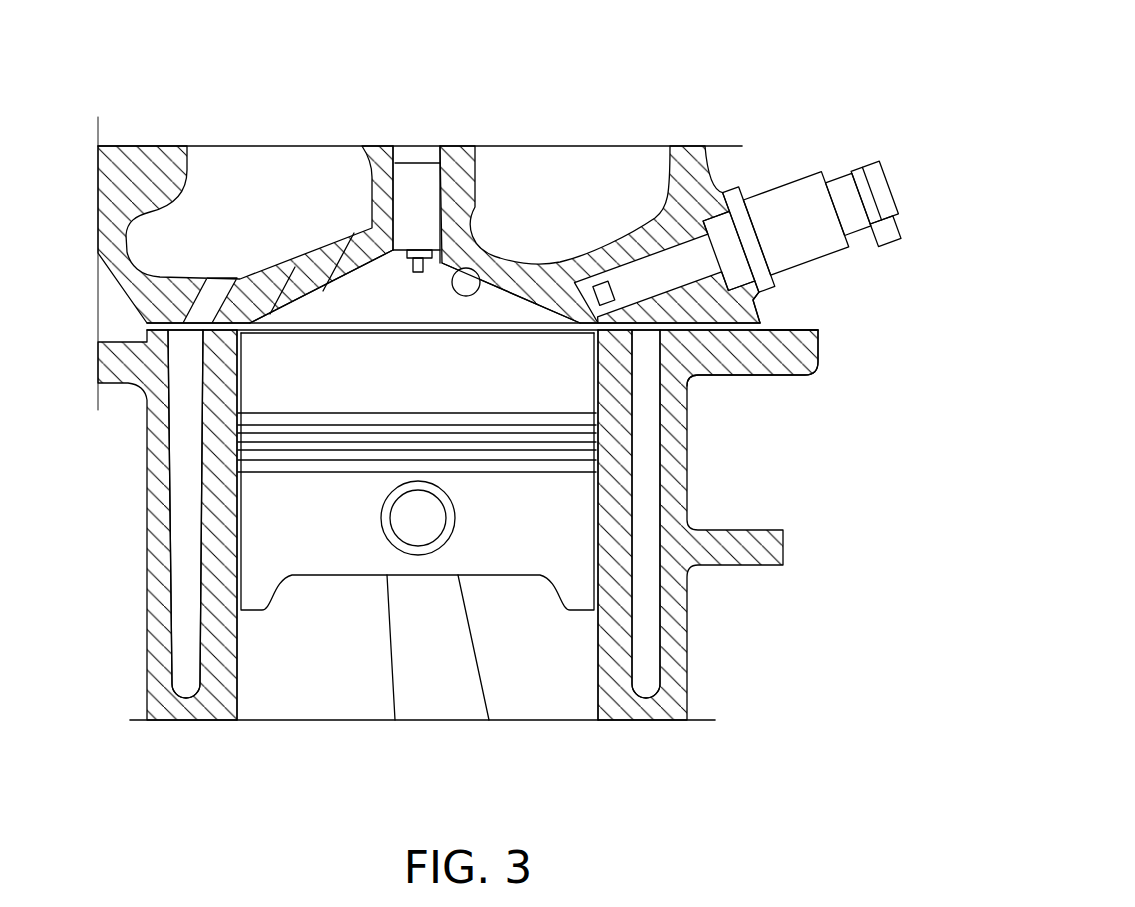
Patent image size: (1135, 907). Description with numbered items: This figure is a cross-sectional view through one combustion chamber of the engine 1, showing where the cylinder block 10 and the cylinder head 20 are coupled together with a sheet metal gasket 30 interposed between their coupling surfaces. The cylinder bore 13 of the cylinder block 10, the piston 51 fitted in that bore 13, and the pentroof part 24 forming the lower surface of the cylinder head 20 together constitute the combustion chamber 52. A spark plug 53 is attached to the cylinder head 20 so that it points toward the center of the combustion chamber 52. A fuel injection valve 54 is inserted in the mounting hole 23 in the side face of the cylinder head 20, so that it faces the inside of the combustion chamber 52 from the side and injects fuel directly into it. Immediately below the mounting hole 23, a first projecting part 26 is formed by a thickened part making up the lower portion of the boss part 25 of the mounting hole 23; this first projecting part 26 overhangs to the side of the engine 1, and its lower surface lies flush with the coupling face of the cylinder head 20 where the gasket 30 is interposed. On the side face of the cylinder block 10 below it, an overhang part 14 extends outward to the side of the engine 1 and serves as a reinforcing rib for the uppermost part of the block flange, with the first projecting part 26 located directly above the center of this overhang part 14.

The engine 1 is at (784, 88).
The cylinder block 10 is at (616, 730).
The cylinder bore 13 is at (597, 377).
The overhang part 14 is at (773, 360).
The cylinder head 20 is at (702, 141).
The mounting hole 23 is at (619, 238).
The pentroof part 24 is at (478, 285).
The boss part 25 is at (729, 193).
The first projecting part 26 is at (757, 305).
The sheet metal gasket 30 is at (712, 380).
The piston 51 is at (524, 552).
The combustion chamber 52 is at (388, 376).
The spark plug 53 is at (413, 200).
The fuel injection valve 54 is at (803, 187).